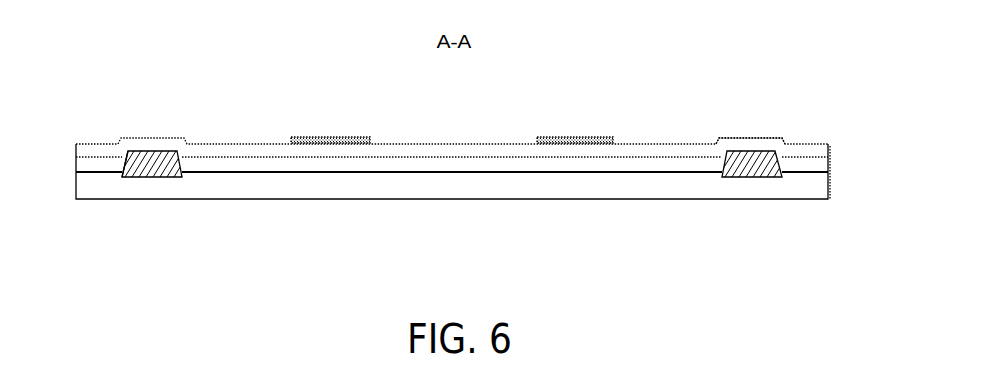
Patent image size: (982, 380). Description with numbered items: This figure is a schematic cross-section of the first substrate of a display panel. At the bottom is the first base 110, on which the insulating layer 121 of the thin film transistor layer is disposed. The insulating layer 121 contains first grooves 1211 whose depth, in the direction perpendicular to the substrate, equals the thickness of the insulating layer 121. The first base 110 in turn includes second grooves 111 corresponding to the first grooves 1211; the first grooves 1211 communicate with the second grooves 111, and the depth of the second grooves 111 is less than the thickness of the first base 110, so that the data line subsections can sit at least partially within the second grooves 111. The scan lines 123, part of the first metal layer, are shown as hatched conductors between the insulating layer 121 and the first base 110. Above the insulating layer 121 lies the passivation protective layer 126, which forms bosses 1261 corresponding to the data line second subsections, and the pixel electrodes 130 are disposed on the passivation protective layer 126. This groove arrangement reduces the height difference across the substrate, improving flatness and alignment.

The first base 110 is at (238, 180).
The second grooves 111 is at (116, 170).
The insulating layer 121 is at (333, 158).
The first grooves 1211 is at (119, 154).
The scan lines 123 is at (148, 177).
The passivation protective layer 126 is at (438, 145).
The bosses 1261 is at (790, 134).
The pixel electrodes 130 is at (575, 137).